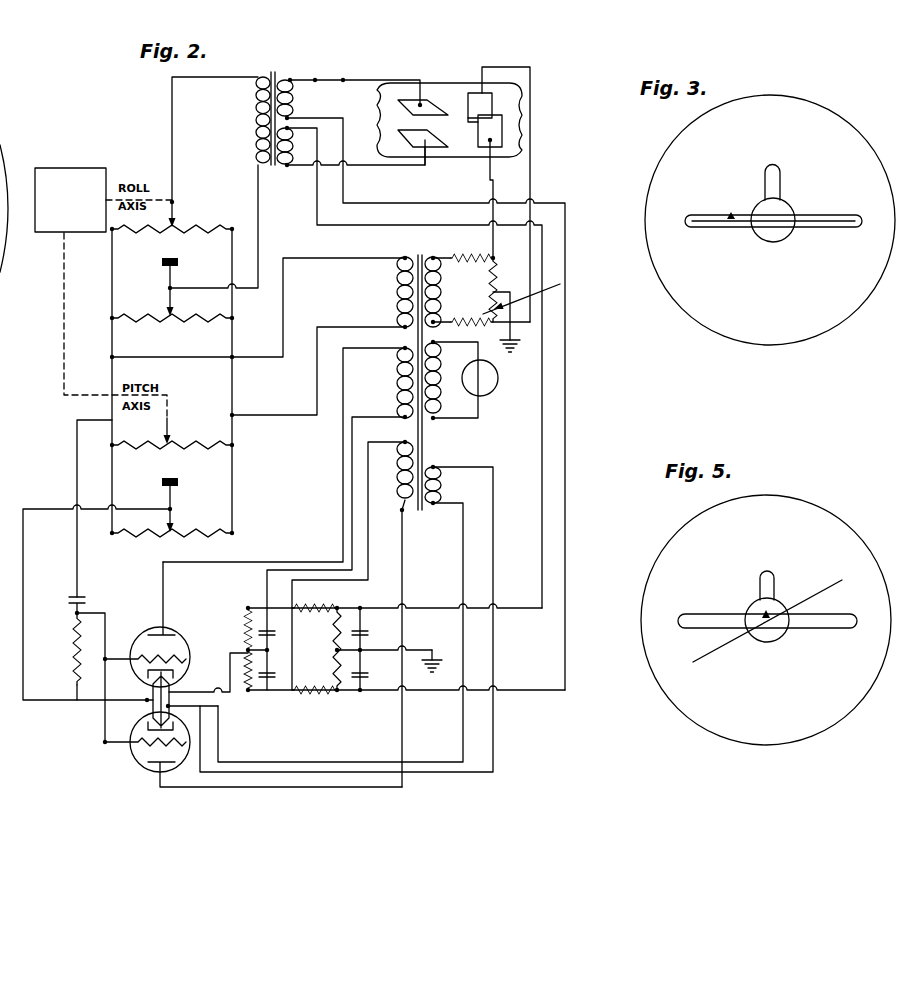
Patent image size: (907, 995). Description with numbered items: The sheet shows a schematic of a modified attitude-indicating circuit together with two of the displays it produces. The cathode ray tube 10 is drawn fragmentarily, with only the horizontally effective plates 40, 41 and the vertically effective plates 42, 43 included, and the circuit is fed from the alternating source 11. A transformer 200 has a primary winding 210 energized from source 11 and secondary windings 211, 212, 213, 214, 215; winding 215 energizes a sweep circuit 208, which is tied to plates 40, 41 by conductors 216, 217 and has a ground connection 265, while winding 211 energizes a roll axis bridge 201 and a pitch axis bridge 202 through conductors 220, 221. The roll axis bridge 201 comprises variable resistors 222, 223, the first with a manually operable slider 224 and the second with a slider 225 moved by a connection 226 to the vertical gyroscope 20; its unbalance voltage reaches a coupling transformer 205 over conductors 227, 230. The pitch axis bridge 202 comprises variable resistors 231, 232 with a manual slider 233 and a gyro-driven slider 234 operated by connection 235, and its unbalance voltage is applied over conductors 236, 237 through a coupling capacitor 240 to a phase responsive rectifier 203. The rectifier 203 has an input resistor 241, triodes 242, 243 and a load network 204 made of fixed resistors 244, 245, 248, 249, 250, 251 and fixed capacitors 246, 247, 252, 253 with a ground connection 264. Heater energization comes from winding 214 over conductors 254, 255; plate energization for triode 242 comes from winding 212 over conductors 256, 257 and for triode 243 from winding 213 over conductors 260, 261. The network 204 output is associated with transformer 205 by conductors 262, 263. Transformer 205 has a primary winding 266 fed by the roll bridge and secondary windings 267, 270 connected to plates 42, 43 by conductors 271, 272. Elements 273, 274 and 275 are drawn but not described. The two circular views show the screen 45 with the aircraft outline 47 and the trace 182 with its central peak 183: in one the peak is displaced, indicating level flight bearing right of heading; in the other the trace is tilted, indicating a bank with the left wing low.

In FIG. 2, the cathode ray tube 10 is at (470, 82).
In FIG. 2, the source 11 is at (492, 389).
In FIG. 2, the vertical gyroscope 20 is at (79, 168).
In FIG. 2, the horizontally effective plate 40 is at (480, 84).
In FIG. 2, the horizontally effective plate 41 is at (481, 148).
In FIG. 2, the vertically effective deflecting plate 42 is at (414, 97).
In FIG. 2, the vertically effective deflecting plate 43 is at (432, 150).
In FIG. 3, the screen 45 is at (804, 299).
In FIG. 5, the screen 45 is at (789, 705).
In FIG. 3, the index of attitude 47 is at (838, 214).
In FIG. 5, the index of attitude 47 is at (838, 629).
In FIG. 3, the trace 182 is at (770, 237).
In FIG. 5, the trace 182 is at (829, 584).
In FIG. 3, the central peak 183 is at (729, 216).
In FIG. 5, the central peak 183 is at (761, 612).
In FIG. 2, the transformer 200 is at (401, 372).
In FIG. 2, the roll axis bridge 201 is at (175, 234).
In FIG. 2, the pitch axis bridge 202 is at (172, 443).
In FIG. 2, the phase responsive rectifier 203 is at (245, 650).
In FIG. 2, the load network 204 is at (362, 651).
In FIG. 2, the coupling transformer 205 is at (273, 118).
In FIG. 2, the sweep circuit 208 is at (480, 309).
In FIG. 2, the primary winding 210 is at (446, 363).
In FIG. 2, the secondary winding 211 is at (397, 291).
In FIG. 2, the secondary winding 212 is at (397, 393).
In FIG. 2, the secondary winding 213 is at (397, 485).
In FIG. 2, the secondary winding 214 is at (446, 483).
In FIG. 2, the secondary winding 215 is at (447, 288).
In FIG. 2, the conductor 216 is at (498, 175).
In FIG. 2, the conductor 217 is at (533, 183).
In FIG. 2, the conductor 220 is at (111, 327).
In FIG. 2, the conductor 221 is at (233, 389).
In FIG. 2, the variable resistor 222 is at (183, 322).
In FIG. 2, the variable resistor 223 is at (210, 229).
In FIG. 2, the manually operable slider 224 is at (168, 295).
In FIG. 2, the slider 225 is at (174, 211).
In FIG. 2, the connection 226 is at (162, 200).
In FIG. 2, the conductor 227 is at (174, 162).
In FIG. 2, the conductor 230 is at (259, 216).
In FIG. 2, the variable resistor 231 is at (207, 531).
In FIG. 2, the variable resistor 232 is at (206, 442).
In FIG. 2, the manually operable slider 233 is at (166, 485).
In FIG. 2, the slider 234 is at (170, 437).
In FIG. 2, the connection 235 is at (63, 346).
In FIG. 2, the conductor 236 is at (22, 545).
In FIG. 2, the conductor 237 is at (76, 566).
In FIG. 2, the coupling capacitor 240 is at (82, 597).
In FIG. 2, the input resistor 241 is at (76, 666).
In FIG. 2, the triode 242 is at (141, 629).
In FIG. 2, the triode 243 is at (140, 757).
In FIG. 2, the fixed resistor 244 is at (248, 606).
In FIG. 2, the fixed resistor 245 is at (263, 694).
In FIG. 2, the fixed capacitor 246 is at (247, 646).
In FIG. 2, the fixed capacitor 247 is at (276, 694).
In FIG. 2, the fixed resistor 248 is at (318, 607).
In FIG. 2, the fixed resistor 249 is at (323, 698).
In FIG. 2, the fixed resistor 250 is at (336, 622).
In FIG. 2, the fixed resistor 251 is at (326, 689).
In FIG. 2, the fixed capacitor 252 is at (362, 633).
In FIG. 2, the fixed capacitor 253 is at (360, 692).
In FIG. 2, the conductor 254 is at (462, 544).
In FIG. 2, the conductor 255 is at (494, 561).
In FIG. 2, the conductor 256 is at (342, 455).
In FIG. 2, the conductor 257 is at (351, 472).
In FIG. 2, the conductor 260 is at (367, 487).
In FIG. 2, the conductor 261 is at (404, 589).
In FIG. 2, the conductor 262 is at (541, 456).
In FIG. 2, the conductor 263 is at (566, 491).
In FIG. 2, the ground connection 264 is at (431, 648).
In FIG. 2, the ground connection 265 is at (497, 290).
In FIG. 2, the primary winding 266 is at (256, 128).
In FIG. 2, the secondary winding 267 is at (293, 104).
In FIG. 2, the secondary winding 270 is at (291, 168).
In FIG. 2, the conductor 271 is at (404, 79).
In FIG. 2, the conductor 272 is at (367, 166).
In FIG. 2, the resistor 273 is at (463, 274).
In FIG. 2, the movable tap 274 is at (522, 296).
In FIG. 2, the conductor 275 is at (229, 671).